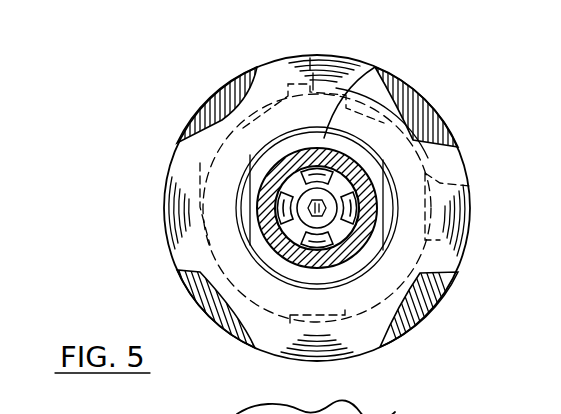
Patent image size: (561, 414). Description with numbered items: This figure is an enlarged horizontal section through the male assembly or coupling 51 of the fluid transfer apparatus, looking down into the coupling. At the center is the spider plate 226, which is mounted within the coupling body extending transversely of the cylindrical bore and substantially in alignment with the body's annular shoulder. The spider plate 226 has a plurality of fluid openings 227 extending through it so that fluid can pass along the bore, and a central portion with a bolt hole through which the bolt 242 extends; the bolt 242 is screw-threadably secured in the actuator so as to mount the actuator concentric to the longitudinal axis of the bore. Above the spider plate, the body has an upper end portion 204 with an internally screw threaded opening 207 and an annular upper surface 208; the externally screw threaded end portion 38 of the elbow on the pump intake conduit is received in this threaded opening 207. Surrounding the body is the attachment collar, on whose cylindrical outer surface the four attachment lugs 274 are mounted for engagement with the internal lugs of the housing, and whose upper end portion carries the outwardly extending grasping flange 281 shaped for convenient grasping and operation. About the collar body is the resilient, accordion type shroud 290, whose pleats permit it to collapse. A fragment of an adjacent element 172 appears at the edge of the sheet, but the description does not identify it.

The male assembly or coupling 51 is at (383, 146).
The resilient accordion type shroud 290 is at (443, 293).
The attachment lugs 274 is at (314, 53).
The grasping flange 281 is at (468, 245).
The internally screw threaded opening 207 is at (256, 165).
The externally screw threaded end portion 38 is at (372, 166).
The annular upper surface 208 is at (375, 67).
The upper end portion 204 is at (328, 133).
The fluid openings 227 is at (318, 292).
The bolt 242 is at (252, 231).
The spider plate 226 is at (343, 209).
The adjacent part fragment 172 is at (427, 412).